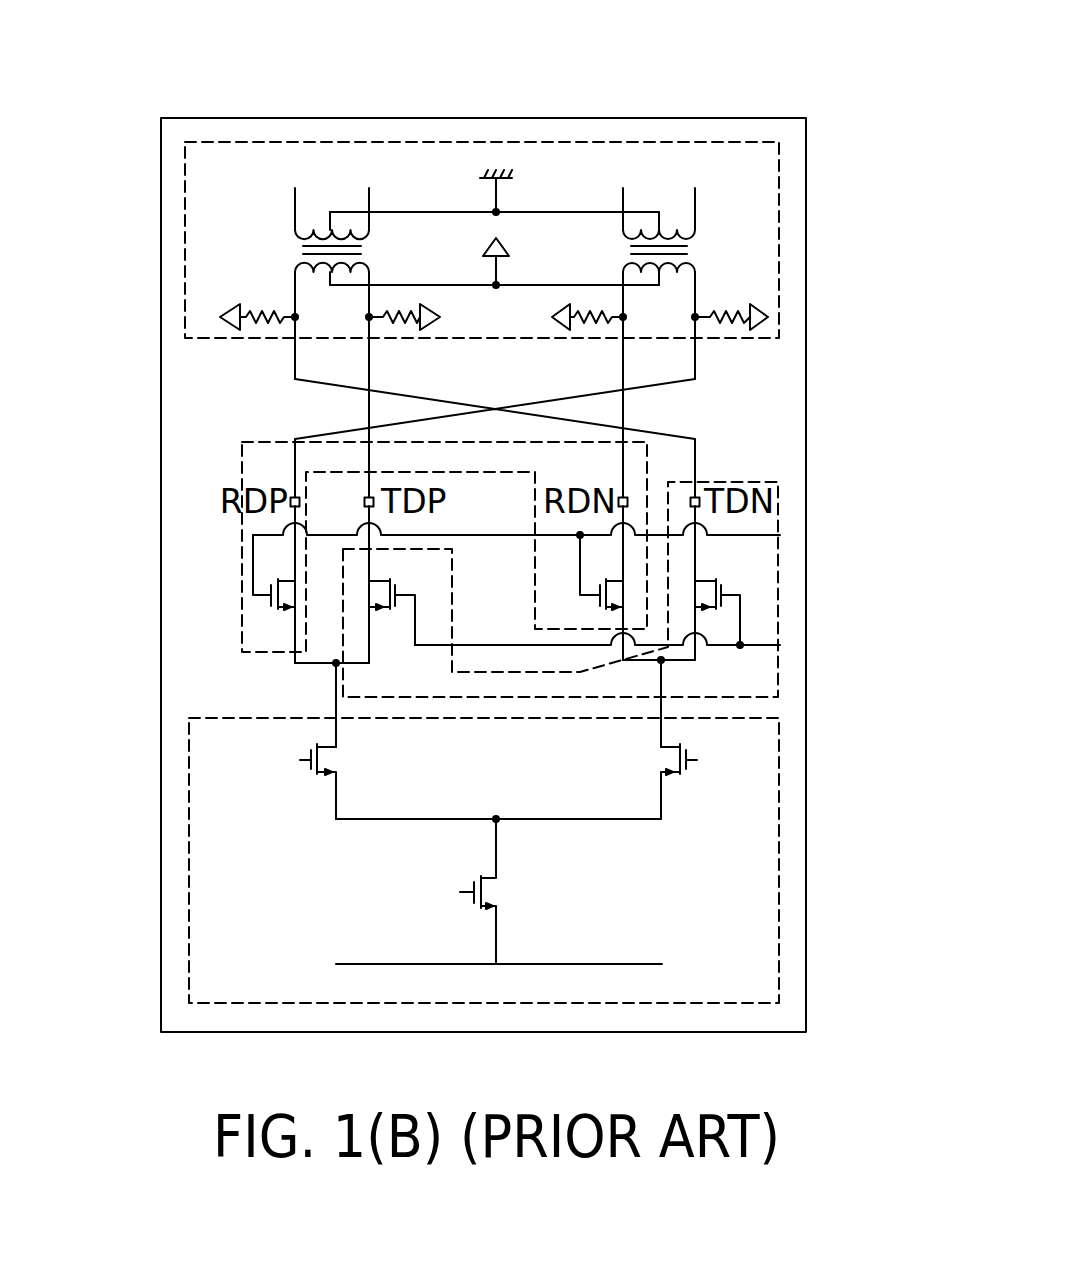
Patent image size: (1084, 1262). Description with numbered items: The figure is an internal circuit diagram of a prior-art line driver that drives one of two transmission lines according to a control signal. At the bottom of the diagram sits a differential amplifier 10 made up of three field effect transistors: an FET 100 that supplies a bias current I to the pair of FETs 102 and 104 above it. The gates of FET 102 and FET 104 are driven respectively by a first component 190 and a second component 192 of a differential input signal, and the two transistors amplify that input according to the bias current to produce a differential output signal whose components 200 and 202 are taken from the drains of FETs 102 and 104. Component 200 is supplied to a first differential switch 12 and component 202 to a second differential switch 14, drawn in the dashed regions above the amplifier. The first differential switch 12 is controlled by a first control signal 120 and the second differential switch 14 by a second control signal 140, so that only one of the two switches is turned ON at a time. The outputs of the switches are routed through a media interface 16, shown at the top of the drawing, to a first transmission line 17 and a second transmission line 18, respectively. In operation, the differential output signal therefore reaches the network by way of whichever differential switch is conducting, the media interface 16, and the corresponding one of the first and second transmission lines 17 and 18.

The differential amplifier 10 is at (713, 1002).
The first differential switch 12 is at (452, 620).
The second differential switch 14 is at (530, 510).
The media interface 16 is at (748, 197).
The first transmission line 17 is at (318, 148).
The second transmission line 18 is at (651, 148).
The FET 100 is at (505, 890).
The FET 102 is at (323, 755).
The FET 104 is at (676, 758).
The first control signal 120 is at (780, 645).
The second control signal 140 is at (780, 535).
The first component of a differential input signal 190 is at (308, 757).
The second component of a differential input signal 192 is at (689, 757).
The component of the differential output signal 200 is at (336, 732).
The component of the differential output signal 202 is at (661, 732).